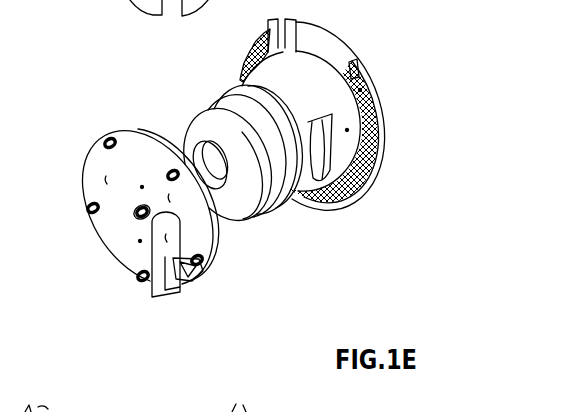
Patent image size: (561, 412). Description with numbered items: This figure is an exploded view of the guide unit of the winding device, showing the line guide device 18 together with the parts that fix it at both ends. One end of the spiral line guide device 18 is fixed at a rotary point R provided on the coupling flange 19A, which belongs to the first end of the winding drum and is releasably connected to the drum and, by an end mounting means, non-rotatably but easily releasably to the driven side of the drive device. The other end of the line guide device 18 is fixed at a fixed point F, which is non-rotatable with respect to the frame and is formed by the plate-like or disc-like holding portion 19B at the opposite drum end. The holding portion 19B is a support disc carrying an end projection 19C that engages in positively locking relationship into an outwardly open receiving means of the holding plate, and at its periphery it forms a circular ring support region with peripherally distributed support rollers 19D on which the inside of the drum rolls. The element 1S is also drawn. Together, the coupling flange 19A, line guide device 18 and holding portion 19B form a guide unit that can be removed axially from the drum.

The line guide device 18 is at (190, 103).
The fixed point F is at (160, 138).
The coupling flange 19A is at (377, 99).
The holding portion 19B is at (110, 239).
The end projection 19C is at (163, 240).
The support rollers 19D is at (88, 207).
The bracket 1S is at (198, 283).
The rotary point R is at (311, 110).